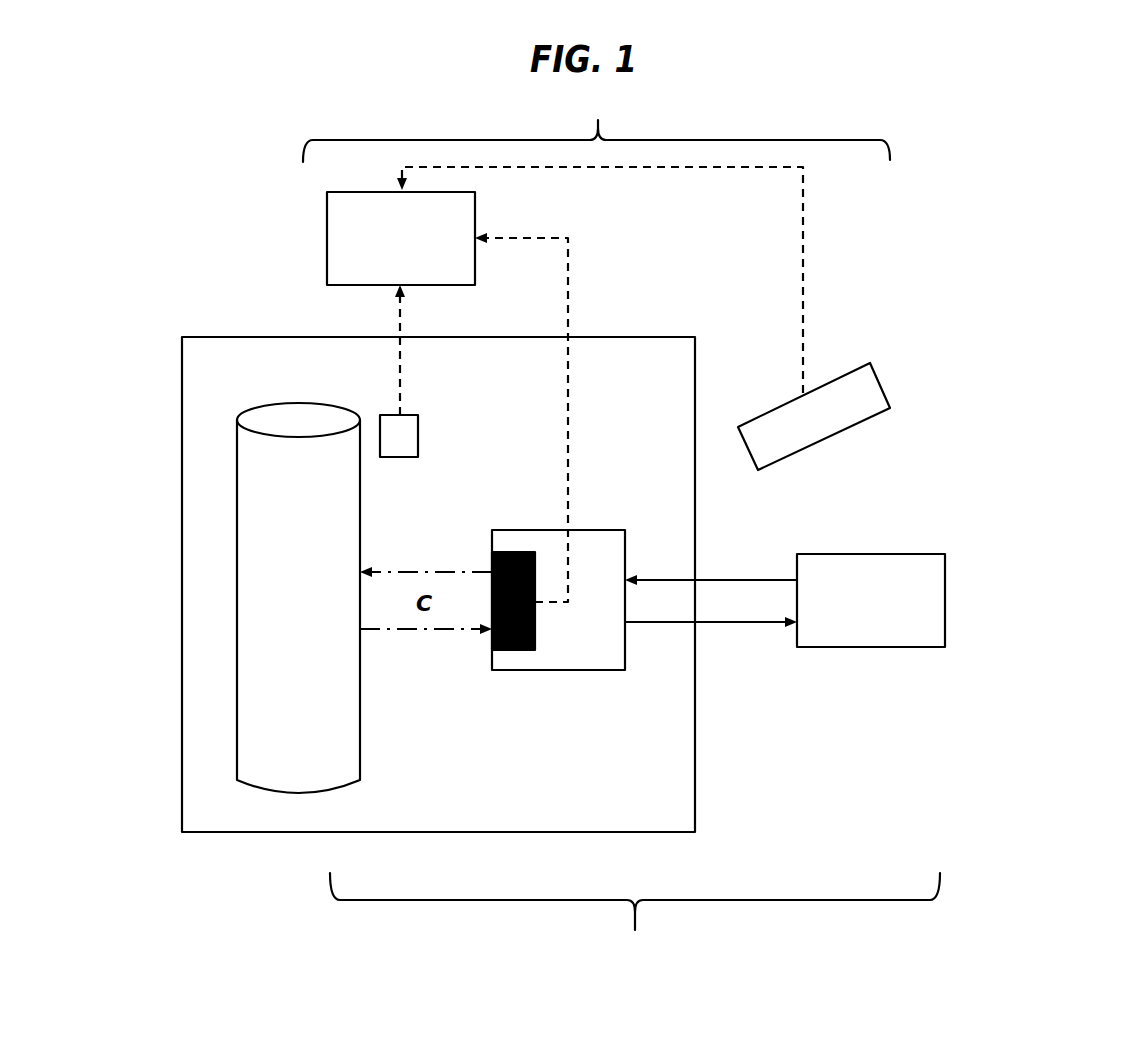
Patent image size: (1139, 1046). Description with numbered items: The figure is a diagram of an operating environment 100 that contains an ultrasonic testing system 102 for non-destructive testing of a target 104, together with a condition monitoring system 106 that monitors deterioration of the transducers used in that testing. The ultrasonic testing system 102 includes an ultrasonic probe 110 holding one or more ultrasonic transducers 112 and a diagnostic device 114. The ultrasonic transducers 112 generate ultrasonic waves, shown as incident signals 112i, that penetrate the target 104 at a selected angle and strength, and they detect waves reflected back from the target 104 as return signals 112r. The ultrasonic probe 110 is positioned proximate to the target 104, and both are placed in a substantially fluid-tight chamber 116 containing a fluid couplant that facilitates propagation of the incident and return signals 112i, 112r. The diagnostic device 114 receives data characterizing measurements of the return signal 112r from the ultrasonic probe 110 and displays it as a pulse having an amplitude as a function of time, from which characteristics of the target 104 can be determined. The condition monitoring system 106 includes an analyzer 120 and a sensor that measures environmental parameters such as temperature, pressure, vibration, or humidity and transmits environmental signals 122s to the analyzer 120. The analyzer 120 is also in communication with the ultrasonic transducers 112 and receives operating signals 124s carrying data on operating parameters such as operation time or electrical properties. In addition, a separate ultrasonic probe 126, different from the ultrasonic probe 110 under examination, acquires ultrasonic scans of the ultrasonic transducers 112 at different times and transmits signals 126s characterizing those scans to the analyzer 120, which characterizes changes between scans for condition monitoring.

The operating environment 100 is at (1040, 301).
The ultrasonic testing system 102 is at (635, 919).
The target 104 is at (316, 615).
The condition monitoring system 106 is at (596, 127).
The ultrasonic probe 110 is at (563, 672).
The ultrasonic transducer 112 is at (513, 552).
The incident signal 112i is at (455, 568).
The return signal 112r is at (455, 633).
The diagnostic device 114 is at (888, 614).
The fluid-tight chamber 116 is at (697, 773).
The analyzer 120 is at (418, 255).
The environmental signal 122s is at (398, 368).
The operating signal 124s is at (570, 368).
The ultrasonic probe 126 is at (825, 434).
The signal 126s is at (803, 265).